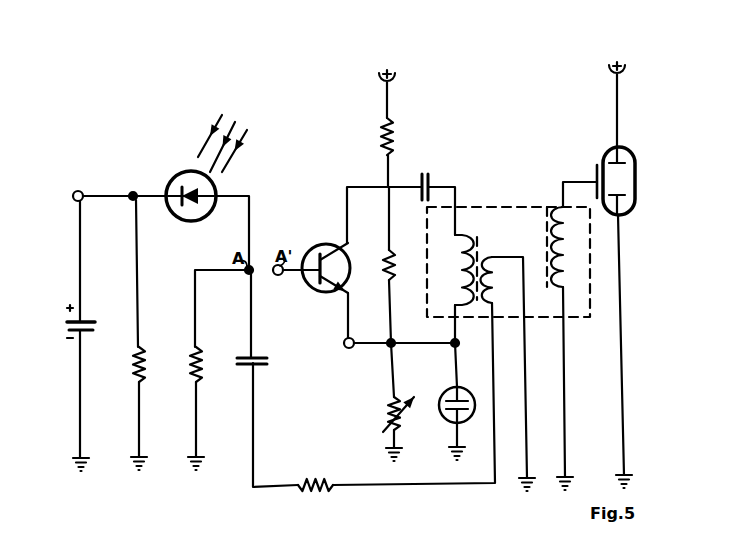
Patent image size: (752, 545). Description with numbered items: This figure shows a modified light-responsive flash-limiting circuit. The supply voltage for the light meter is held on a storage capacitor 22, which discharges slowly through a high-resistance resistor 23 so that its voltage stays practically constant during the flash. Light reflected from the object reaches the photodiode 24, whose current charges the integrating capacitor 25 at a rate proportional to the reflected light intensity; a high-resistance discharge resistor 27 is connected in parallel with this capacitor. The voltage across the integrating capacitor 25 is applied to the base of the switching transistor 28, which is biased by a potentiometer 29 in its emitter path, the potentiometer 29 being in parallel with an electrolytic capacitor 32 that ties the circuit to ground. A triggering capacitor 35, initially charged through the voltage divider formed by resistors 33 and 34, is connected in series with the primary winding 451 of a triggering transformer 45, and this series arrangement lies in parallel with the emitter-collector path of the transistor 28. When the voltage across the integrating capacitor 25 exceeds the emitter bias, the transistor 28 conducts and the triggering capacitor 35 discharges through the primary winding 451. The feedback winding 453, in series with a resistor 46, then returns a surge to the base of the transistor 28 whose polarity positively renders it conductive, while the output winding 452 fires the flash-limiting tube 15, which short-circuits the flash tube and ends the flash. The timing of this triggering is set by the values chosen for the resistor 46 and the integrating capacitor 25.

The flash-limiting tube 15 is at (635, 197).
The storage capacitor 22 is at (92, 334).
The resistor 23 is at (136, 379).
The photodiode 24 is at (179, 172).
The integrating capacitor 25 is at (257, 366).
The high-resistance discharge resistor 27 is at (193, 379).
The switching transistor 28 is at (337, 245).
The potentiometer 29 is at (397, 431).
The electrolytic capacitor 32 is at (469, 393).
The resistor 33 is at (392, 279).
The resistor 34 is at (381, 152).
The triggering capacitor 35 is at (429, 176).
The triggering transformer 45 is at (510, 207).
The primary winding 451 is at (471, 297).
The output winding 452 is at (555, 273).
The feedback winding 453 is at (482, 297).
The resistor 46 is at (330, 493).